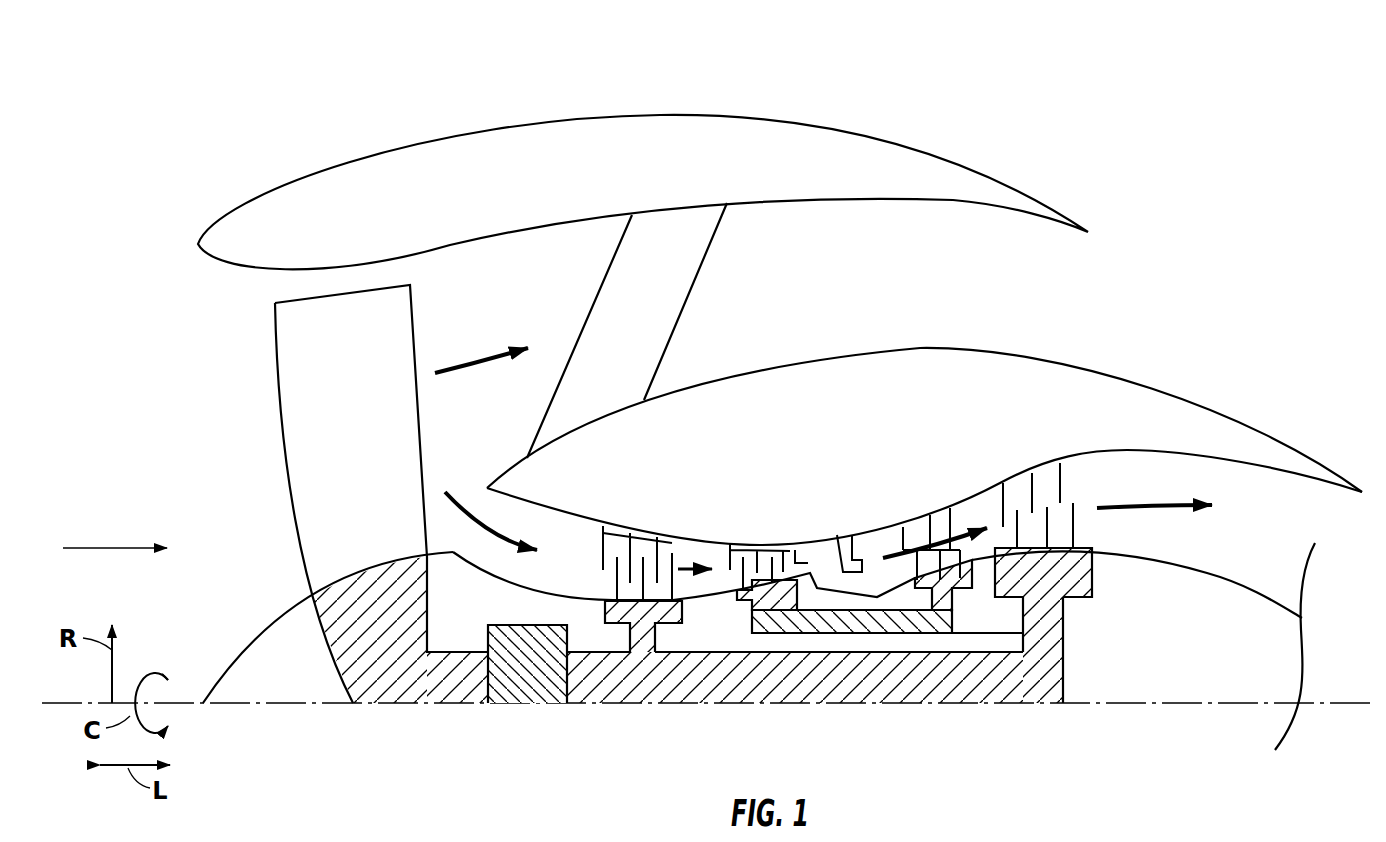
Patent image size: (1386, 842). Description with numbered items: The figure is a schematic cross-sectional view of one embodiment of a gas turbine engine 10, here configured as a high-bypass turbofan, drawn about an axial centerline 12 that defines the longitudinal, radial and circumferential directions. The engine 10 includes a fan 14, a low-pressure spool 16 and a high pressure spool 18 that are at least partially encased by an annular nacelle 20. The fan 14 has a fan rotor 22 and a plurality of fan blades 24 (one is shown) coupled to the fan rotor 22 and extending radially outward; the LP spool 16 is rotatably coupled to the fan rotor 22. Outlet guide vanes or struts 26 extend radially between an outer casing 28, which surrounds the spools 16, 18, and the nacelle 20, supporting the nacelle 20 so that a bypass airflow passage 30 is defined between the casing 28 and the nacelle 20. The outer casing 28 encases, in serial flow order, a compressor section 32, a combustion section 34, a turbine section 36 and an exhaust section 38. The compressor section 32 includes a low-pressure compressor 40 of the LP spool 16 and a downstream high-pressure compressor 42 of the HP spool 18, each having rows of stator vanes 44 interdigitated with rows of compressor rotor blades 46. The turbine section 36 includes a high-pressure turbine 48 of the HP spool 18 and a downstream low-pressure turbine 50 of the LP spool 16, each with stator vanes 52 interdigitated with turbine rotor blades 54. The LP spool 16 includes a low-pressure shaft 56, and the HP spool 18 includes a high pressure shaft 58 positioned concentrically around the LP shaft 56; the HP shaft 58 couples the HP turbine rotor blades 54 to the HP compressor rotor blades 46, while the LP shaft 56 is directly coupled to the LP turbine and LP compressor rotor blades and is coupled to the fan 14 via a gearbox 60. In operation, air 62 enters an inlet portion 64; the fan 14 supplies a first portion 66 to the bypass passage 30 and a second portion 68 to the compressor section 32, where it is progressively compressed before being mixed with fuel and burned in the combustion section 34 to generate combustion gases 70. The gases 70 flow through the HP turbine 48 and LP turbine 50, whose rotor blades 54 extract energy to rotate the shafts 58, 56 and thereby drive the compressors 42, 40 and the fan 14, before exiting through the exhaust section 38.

The gas turbine engine 10 is at (226, 77).
The axial centerline 12 is at (1162, 708).
The fan 14 is at (258, 372).
The low-pressure (LP) spool 16 is at (635, 720).
The high pressure (HP) spool 18 is at (933, 648).
The annular nacelle 20 is at (330, 165).
The fan rotor 22 is at (273, 632).
The fan blades 24 is at (287, 474).
The outlet guide vanes or struts 26 is at (598, 292).
The outer casing 28 is at (990, 348).
The bypass airflow passage 30 is at (787, 287).
The compressor section 32 is at (707, 497).
The combustion section 34 is at (843, 505).
The turbine section 36 is at (957, 465).
The exhaust section 38 is at (1285, 524).
The low-pressure (LP) compressor 40 is at (625, 505).
The high-pressure (HP) compressor 42 is at (757, 505).
The stator vanes 44 is at (600, 548).
The compressor rotor blades 46 is at (687, 560).
The high-pressure (HP) turbine 48 is at (915, 495).
The low-pressure (LP) turbine 50 is at (1042, 440).
The stator vanes 52 is at (903, 530).
The turbine rotor blades 54 is at (1073, 522).
The low-pressure (LP) shaft 56 is at (755, 680).
The high pressure (HP) shaft 58 is at (915, 633).
The gearbox 60 is at (535, 690).
The air 62 is at (115, 548).
The inlet portion 64 is at (197, 283).
The first portion of the air 66 is at (473, 357).
The second portion of the air 68 is at (462, 492).
The combustion gases 70 is at (973, 527).